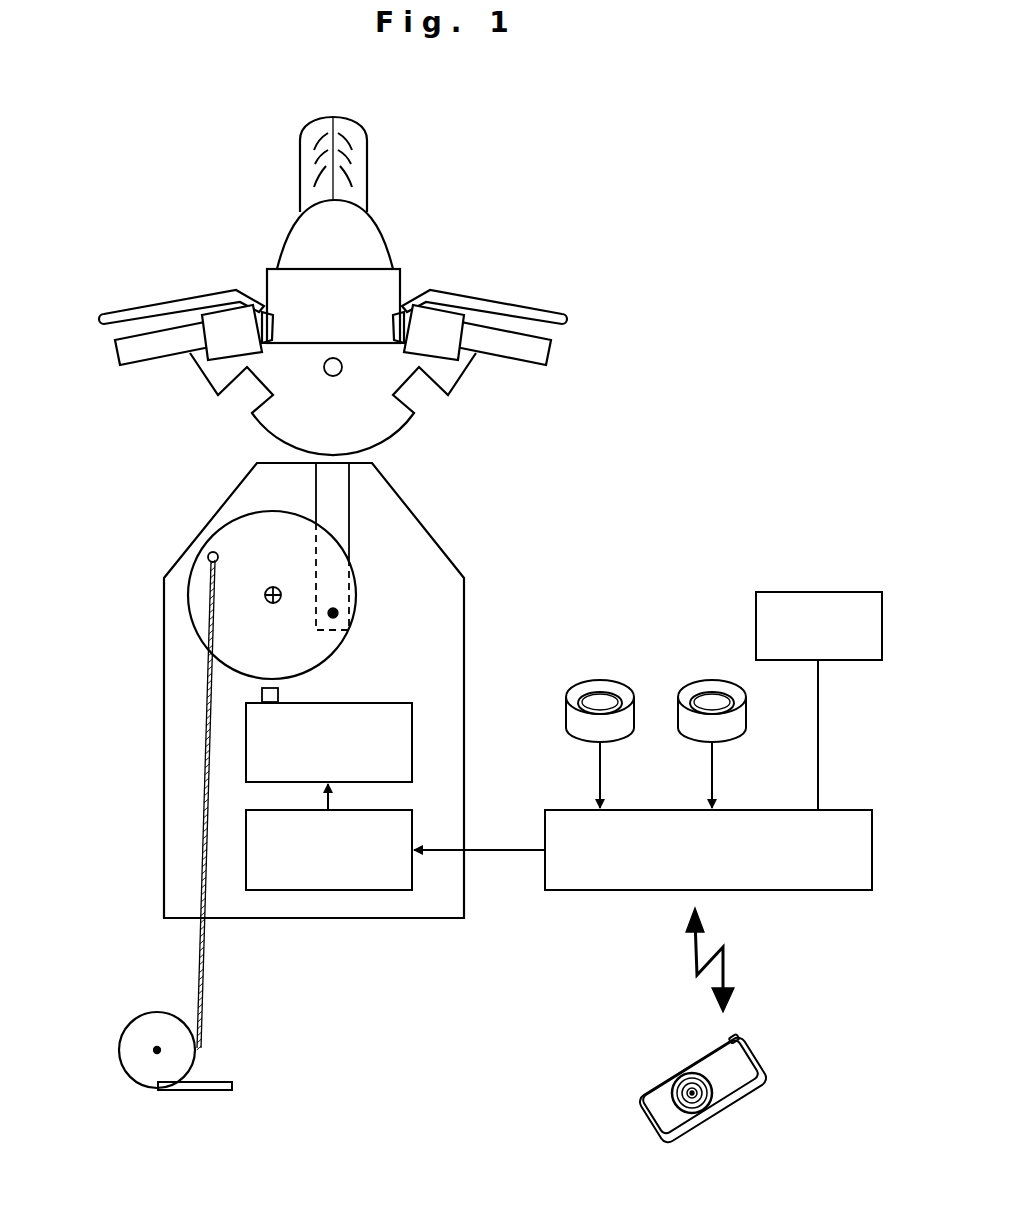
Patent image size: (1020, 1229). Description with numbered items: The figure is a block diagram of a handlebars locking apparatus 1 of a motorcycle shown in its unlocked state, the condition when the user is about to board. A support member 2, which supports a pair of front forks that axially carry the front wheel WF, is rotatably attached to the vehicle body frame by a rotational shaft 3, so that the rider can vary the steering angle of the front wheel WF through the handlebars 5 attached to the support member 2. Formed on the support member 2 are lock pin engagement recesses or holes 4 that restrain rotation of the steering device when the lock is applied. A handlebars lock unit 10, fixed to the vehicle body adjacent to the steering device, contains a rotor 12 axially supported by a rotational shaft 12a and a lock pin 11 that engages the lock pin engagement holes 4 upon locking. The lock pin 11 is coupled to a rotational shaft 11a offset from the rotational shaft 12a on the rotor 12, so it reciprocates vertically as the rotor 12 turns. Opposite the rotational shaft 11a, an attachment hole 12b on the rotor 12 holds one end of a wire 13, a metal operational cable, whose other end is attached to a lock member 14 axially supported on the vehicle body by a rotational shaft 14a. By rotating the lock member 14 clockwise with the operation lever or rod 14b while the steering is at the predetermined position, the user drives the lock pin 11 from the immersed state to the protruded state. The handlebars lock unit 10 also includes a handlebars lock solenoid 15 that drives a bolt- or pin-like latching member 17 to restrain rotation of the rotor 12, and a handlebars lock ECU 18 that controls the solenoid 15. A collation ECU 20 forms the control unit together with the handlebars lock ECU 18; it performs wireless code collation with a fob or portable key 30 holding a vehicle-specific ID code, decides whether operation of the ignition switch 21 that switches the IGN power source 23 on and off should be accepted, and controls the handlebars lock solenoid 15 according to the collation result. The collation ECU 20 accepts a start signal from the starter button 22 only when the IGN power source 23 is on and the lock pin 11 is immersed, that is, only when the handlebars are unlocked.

The handlebars locking apparatus 1 is at (232, 178).
The front wheel WF is at (364, 152).
The support member 2 is at (298, 355).
The rotational shaft 3 is at (338, 357).
The lock pin engagement recesses or holes 4 is at (258, 382).
The handlebars 5 is at (135, 355).
The handlebars lock unit 10 is at (297, 921).
The lock pin 11 is at (340, 502).
The rotational shaft 11a is at (342, 613).
The rotor 12 is at (245, 542).
The rotational shaft 12a is at (265, 601).
The attachment hole 12b is at (208, 556).
The wire 13 is at (205, 797).
The lock member 14 is at (125, 1055).
The rotational shaft 14a is at (153, 1046).
The operation lever or rod 14b is at (193, 1090).
The handlebars lock solenoid 15 is at (412, 742).
The latching member 17 is at (278, 696).
The handlebars lock ECU 18 is at (390, 890).
The collation ECU 20 is at (778, 890).
The ignition switch 21 is at (620, 740).
The starter button 22 is at (732, 740).
The IGN power source 23 is at (837, 660).
The fob or portable key 30 is at (737, 1098).